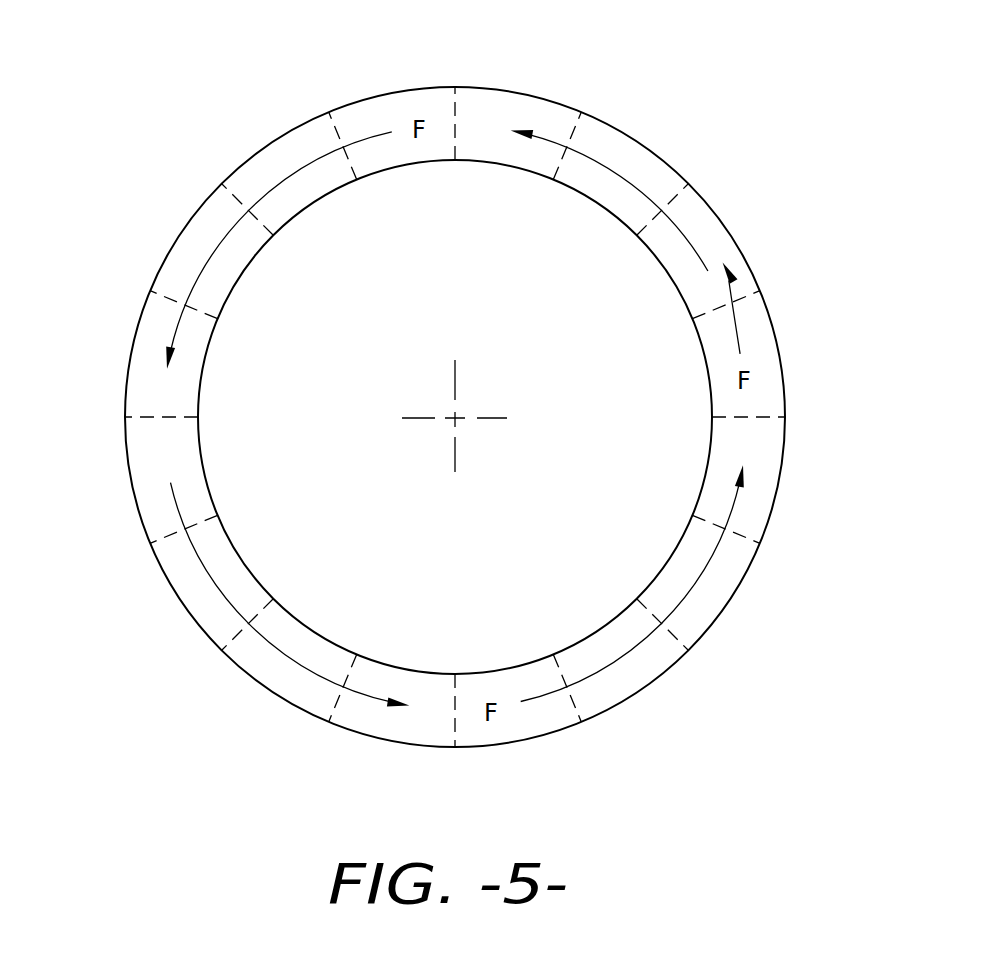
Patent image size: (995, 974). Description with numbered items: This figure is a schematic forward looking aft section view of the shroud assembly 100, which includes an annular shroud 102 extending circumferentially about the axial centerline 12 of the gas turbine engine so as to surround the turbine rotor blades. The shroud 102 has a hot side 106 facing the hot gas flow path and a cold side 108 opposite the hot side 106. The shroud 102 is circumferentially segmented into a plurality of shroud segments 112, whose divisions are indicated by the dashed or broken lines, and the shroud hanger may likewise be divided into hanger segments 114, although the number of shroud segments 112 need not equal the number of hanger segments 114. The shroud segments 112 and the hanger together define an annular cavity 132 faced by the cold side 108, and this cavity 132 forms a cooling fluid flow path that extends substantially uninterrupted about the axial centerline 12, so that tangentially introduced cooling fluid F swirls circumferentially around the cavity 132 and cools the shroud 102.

The shroud assembly 100 is at (208, 76).
The annular shroud 102 is at (243, 272).
The hot side 106 is at (516, 184).
The cold side 108 is at (481, 142).
The shroud segment 112 is at (153, 442).
The hanger segment 114 is at (130, 338).
The cavity 132 is at (728, 288).
The axial centerline 12 is at (492, 418).